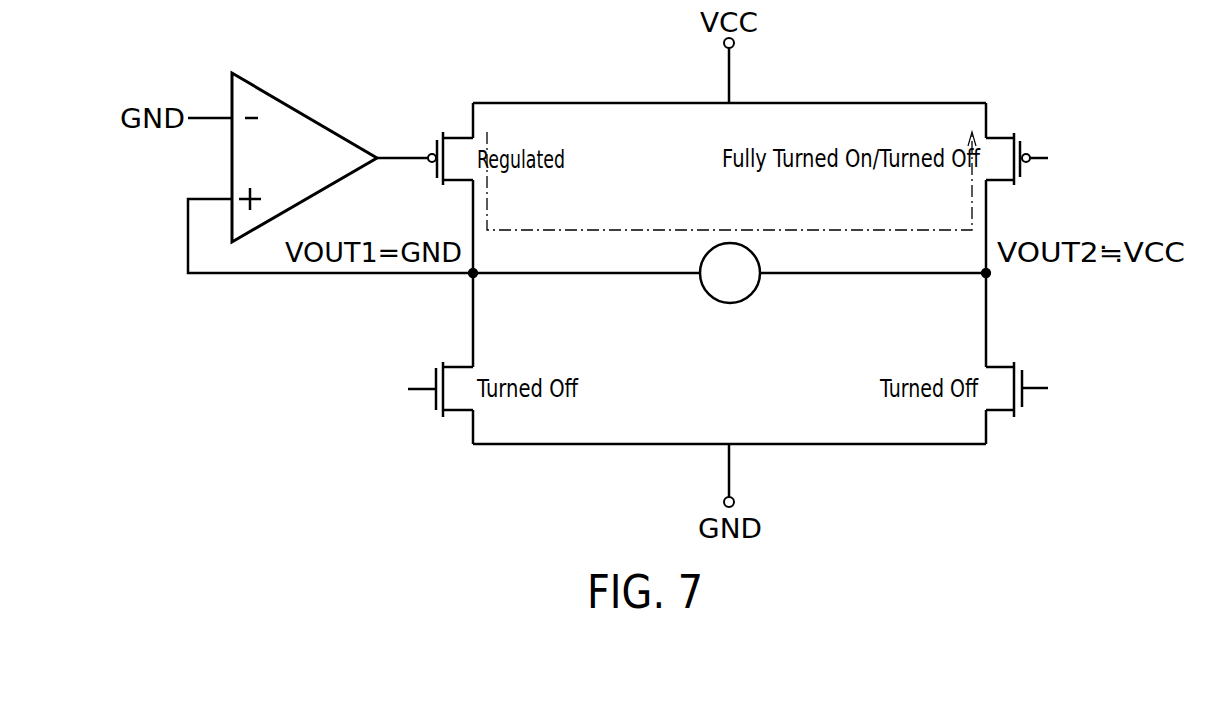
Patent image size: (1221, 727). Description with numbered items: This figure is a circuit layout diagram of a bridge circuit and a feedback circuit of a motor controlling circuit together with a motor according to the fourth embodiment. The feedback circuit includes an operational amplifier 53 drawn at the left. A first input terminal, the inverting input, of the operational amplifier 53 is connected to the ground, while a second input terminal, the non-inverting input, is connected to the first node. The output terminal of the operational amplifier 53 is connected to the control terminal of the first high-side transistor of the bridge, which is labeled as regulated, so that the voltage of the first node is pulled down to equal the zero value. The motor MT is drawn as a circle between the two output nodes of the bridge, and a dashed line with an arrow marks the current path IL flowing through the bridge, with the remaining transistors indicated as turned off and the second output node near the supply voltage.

The operational amplifier 53 is at (306, 111).
The motor MT is at (730, 303).
The load current path IL is at (731, 181).